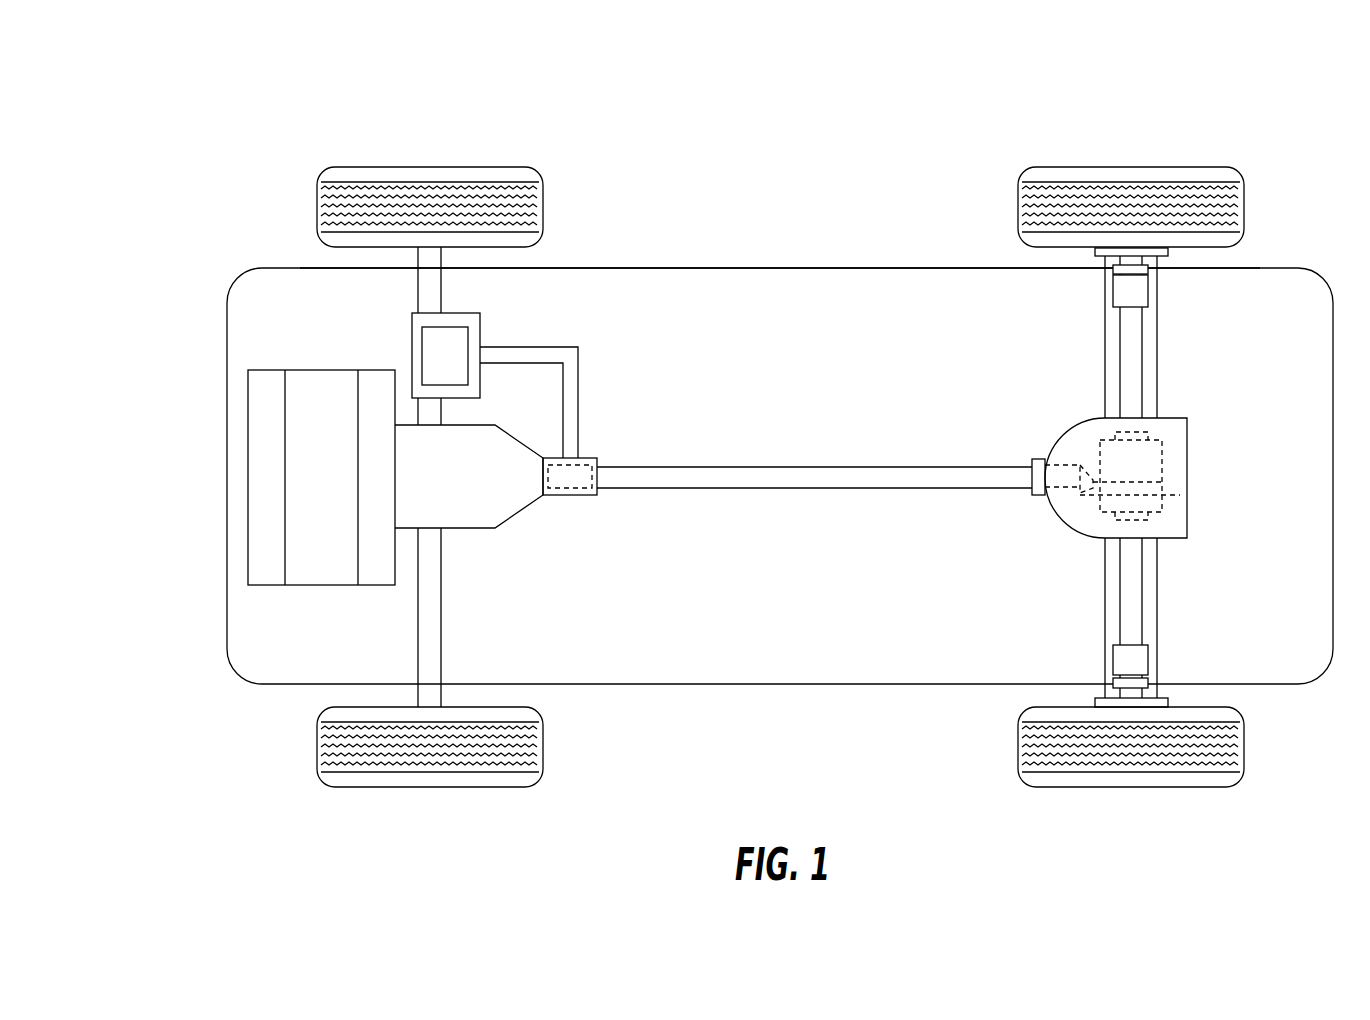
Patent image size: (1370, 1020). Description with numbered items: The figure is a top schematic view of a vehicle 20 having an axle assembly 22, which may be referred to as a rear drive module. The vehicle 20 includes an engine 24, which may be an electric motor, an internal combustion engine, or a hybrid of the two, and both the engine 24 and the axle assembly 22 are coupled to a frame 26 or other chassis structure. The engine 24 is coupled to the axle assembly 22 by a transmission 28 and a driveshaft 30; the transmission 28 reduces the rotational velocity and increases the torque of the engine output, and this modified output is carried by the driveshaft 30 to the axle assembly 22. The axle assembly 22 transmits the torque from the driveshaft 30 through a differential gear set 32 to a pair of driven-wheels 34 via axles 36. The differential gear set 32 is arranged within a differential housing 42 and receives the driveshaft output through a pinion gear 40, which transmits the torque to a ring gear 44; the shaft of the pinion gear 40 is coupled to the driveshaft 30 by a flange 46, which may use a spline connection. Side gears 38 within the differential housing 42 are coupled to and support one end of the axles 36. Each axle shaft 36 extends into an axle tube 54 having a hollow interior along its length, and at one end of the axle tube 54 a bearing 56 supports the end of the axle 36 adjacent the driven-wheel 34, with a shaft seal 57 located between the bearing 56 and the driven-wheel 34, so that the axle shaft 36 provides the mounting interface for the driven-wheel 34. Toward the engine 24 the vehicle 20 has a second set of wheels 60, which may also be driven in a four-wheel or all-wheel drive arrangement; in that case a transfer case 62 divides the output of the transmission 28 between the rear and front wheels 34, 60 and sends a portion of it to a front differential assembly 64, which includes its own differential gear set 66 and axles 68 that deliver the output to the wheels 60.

The vehicle 20 is at (866, 118).
The axle assembly 22 is at (1201, 505).
The engine 24 is at (246, 476).
The frame 26 is at (820, 268).
The transmission 28 is at (517, 519).
The driveshaft 30 is at (845, 467).
The differential gear set 32 is at (1188, 438).
The driven-wheels 34 is at (1128, 167).
The axles 36 is at (1157, 385).
The side gears 38 is at (1114, 517).
The pinion gear 40 is at (1083, 462).
The differential housing 42 is at (1046, 512).
The ring gear 44 is at (1182, 495).
The flange 46 is at (1032, 465).
The axle tube 54 is at (1105, 350).
The bearing 56 is at (1113, 296).
The shaft seal 57 is at (1113, 270).
The second set of wheels 60 is at (428, 167).
The transfer case 62 is at (585, 496).
The front differential assembly 64 is at (406, 352).
The differential gear set 66 is at (467, 337).
The axles 68 is at (406, 282).